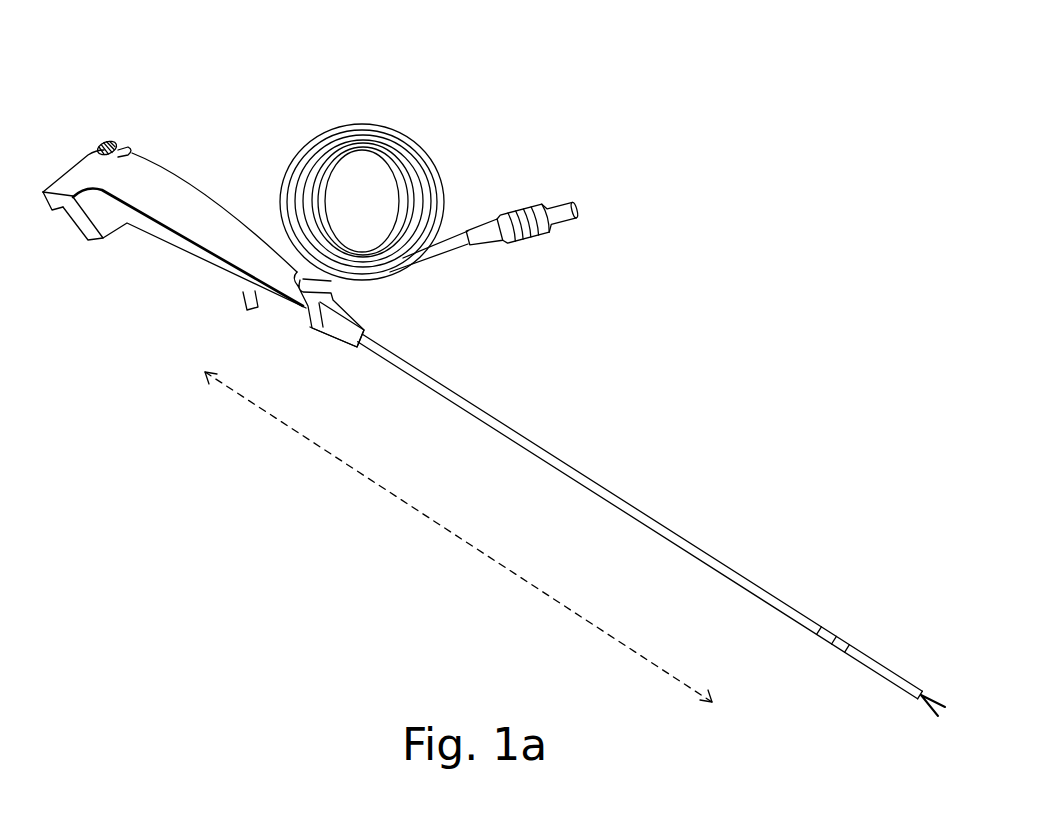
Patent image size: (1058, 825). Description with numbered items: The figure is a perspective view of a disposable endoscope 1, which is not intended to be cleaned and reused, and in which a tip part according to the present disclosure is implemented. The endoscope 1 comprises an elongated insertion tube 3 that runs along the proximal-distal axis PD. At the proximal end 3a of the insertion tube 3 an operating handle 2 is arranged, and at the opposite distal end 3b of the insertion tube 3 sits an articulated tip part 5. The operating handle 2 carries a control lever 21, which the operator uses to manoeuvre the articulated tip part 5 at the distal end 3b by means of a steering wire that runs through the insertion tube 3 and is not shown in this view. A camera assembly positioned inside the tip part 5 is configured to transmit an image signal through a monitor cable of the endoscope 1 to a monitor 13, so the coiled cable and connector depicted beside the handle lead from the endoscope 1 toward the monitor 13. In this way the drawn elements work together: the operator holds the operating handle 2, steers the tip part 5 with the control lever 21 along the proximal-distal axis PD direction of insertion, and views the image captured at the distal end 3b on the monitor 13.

The endoscope 1 is at (724, 213).
The operating handle 2 is at (199, 187).
The control lever 21 is at (112, 140).
The monitor 13 is at (545, 203).
The insertion tube 3 is at (633, 500).
The proximal end 3a is at (360, 341).
The distal end 3b is at (916, 687).
The tip part 5 is at (873, 662).
The proximal-distal axis PD is at (488, 560).